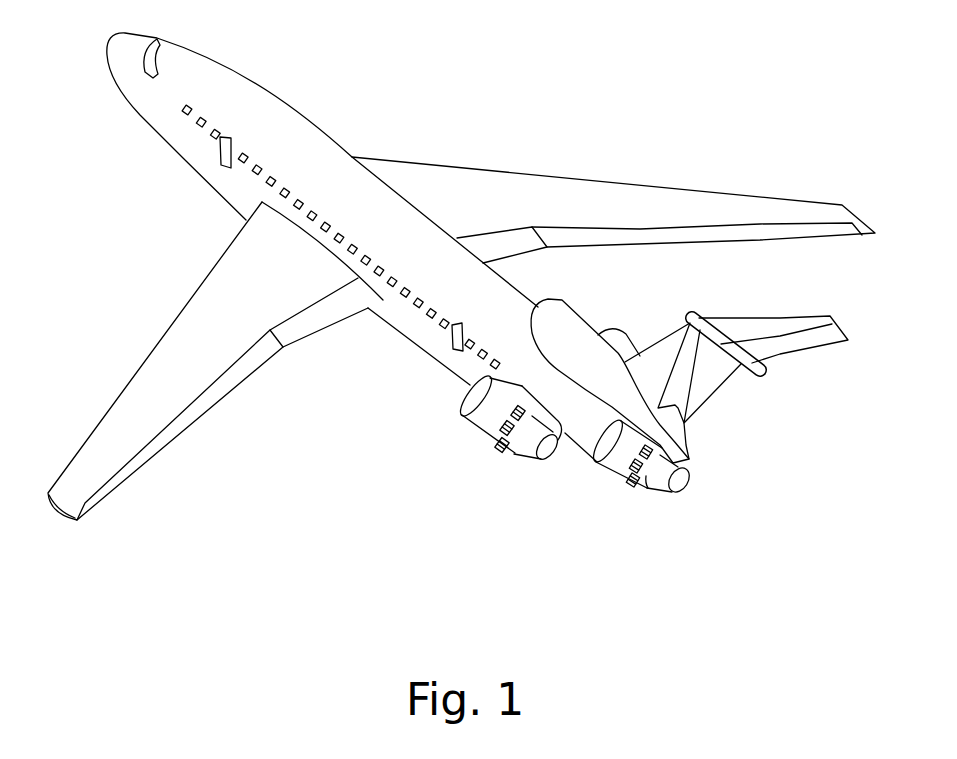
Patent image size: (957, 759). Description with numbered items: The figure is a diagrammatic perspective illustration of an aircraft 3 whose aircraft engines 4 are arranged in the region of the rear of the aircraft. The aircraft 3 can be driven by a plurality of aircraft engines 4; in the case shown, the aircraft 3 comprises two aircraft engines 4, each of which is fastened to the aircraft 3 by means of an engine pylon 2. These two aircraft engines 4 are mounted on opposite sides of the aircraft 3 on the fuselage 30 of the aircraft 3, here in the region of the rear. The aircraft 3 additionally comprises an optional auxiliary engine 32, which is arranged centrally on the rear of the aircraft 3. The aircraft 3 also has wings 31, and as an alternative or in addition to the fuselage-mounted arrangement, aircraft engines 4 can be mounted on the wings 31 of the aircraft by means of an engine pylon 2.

The aircraft 3 is at (432, 150).
The fuselage 30 is at (440, 348).
The wings 31 is at (588, 188).
The aircraft engines 4 is at (619, 344).
The engine pylon 2 is at (563, 427).
The auxiliary engine 32 is at (613, 462).